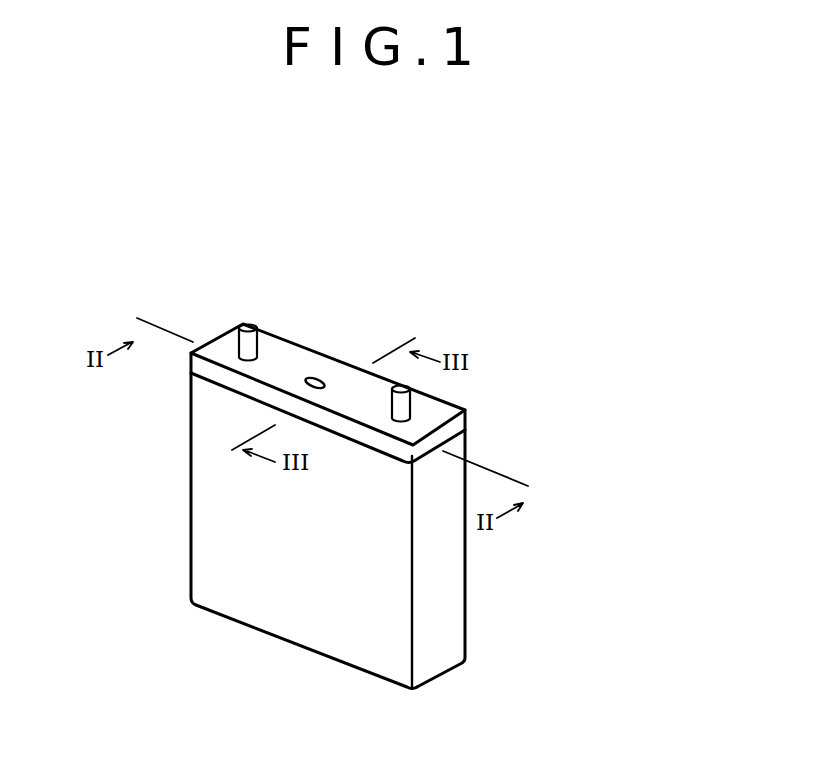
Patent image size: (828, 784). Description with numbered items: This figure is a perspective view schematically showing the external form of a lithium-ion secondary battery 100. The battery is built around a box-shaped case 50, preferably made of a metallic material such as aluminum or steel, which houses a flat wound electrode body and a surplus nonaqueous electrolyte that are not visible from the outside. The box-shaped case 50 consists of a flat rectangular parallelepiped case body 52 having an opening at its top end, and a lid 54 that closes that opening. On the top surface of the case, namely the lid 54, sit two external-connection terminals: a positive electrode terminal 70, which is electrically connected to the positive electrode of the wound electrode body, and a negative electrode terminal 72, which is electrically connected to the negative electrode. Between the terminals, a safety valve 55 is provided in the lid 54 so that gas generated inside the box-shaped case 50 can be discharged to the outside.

The lithium-ion secondary battery 100 is at (588, 285).
The box-shaped case 50 is at (302, 613).
The case body 52 is at (457, 627).
The lid 54 is at (465, 422).
The safety valve 55 is at (314, 377).
The positive electrode terminal 70 is at (249, 326).
The negative electrode terminal 72 is at (406, 383).